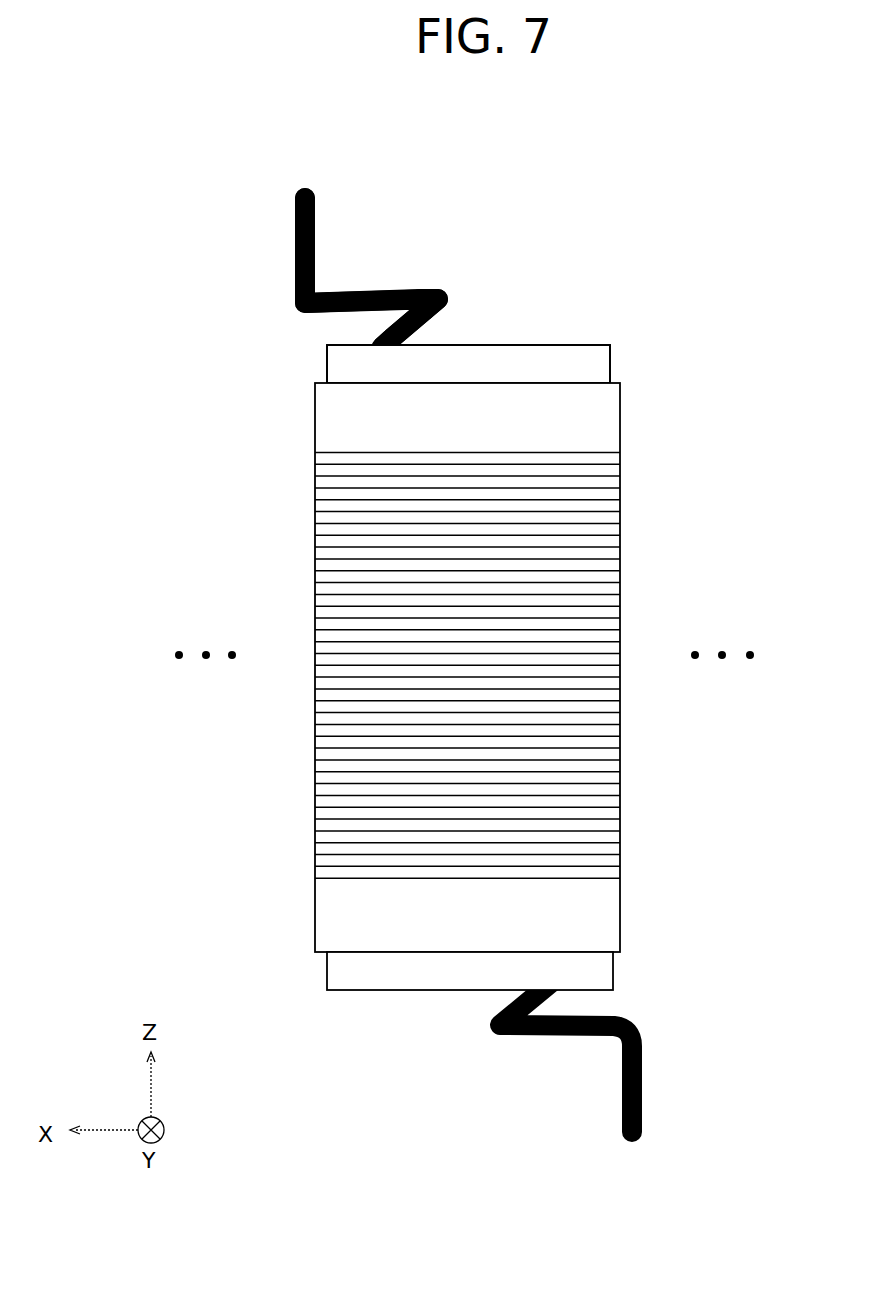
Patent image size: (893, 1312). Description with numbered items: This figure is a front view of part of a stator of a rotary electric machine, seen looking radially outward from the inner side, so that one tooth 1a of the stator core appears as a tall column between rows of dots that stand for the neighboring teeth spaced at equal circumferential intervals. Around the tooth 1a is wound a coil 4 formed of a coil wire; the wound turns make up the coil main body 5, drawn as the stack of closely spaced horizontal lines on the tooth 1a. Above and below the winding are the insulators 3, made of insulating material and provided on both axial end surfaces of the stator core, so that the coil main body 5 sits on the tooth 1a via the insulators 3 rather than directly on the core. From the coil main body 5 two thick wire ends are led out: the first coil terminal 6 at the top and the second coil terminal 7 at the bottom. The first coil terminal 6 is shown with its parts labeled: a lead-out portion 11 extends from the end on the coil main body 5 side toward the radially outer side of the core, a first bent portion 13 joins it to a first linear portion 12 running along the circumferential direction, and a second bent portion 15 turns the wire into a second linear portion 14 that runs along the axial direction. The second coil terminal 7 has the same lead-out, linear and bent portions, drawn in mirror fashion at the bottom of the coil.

The tooth 1a is at (620, 796).
The insulator 3 is at (620, 422).
The coil 4 is at (598, 345).
The coil main body 5 is at (327, 358).
The first coil terminal 6 is at (423, 291).
The second coil terminal 7 is at (643, 1073).
The lead-out portion 11 is at (436, 333).
The first linear portion 12 is at (385, 290).
The first bent portion 13 is at (450, 304).
The second linear portion 14 is at (295, 223).
The second bent portion 15 is at (300, 299).